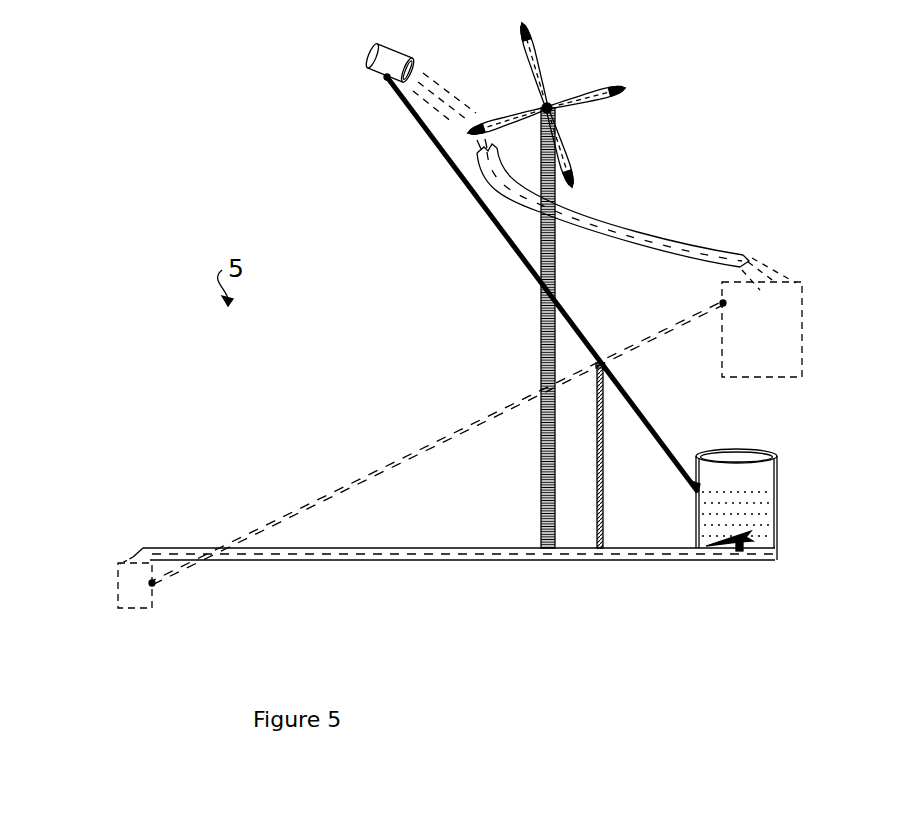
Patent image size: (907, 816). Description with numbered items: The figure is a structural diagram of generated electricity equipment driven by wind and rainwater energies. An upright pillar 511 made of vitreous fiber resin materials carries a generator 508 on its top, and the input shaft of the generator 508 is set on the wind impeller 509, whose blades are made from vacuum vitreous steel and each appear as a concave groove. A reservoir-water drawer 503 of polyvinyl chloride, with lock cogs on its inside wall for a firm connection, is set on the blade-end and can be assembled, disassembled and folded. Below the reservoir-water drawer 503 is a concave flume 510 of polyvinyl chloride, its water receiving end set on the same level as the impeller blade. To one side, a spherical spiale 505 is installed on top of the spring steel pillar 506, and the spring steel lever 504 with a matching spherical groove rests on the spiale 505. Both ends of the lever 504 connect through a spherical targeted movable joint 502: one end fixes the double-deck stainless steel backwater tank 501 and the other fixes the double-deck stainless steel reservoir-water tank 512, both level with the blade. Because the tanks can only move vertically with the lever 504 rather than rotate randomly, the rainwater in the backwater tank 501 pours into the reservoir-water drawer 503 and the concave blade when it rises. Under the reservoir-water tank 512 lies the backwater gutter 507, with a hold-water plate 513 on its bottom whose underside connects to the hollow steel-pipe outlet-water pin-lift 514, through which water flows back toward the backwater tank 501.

The backwater tank 501 is at (365, 68).
The spherical targeted movable joint 502 is at (348, 106).
The reservoir-water drawer 503 is at (441, 163).
The lever 504 is at (536, 270).
The spiale 505 is at (597, 366).
The pillar 506 is at (597, 437).
The backwater gutter 507 is at (190, 559).
The generator 508 is at (629, 80).
The wind impeller 509 is at (557, 125).
The flume 510 is at (613, 236).
The upright pillar 511 is at (556, 405).
The reservoir-water tank 512 is at (778, 503).
The hold-water plate 513 is at (753, 535).
The outlet-water pin-lift 514 is at (803, 562).